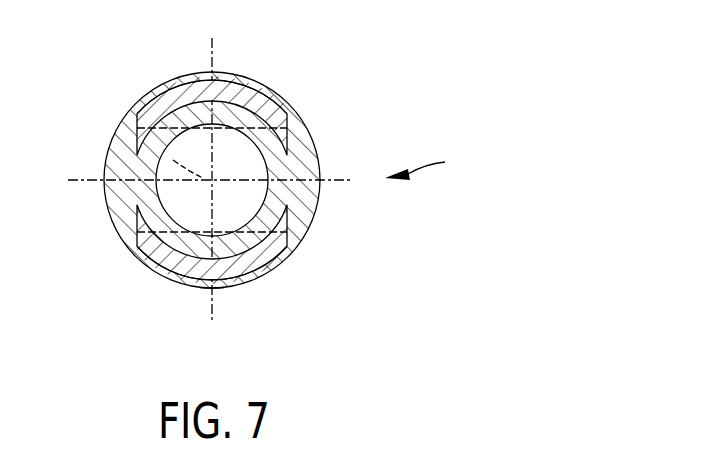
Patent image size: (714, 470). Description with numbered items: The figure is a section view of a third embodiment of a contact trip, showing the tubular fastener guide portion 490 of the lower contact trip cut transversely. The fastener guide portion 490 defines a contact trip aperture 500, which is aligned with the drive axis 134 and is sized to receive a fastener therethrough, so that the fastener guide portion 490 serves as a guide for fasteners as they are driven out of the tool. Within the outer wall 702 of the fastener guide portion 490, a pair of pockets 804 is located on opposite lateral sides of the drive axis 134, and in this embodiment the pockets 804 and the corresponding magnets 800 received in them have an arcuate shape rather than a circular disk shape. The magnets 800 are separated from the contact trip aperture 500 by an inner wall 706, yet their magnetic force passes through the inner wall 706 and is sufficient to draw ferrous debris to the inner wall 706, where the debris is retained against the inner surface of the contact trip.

The outer wall 702 is at (130, 250).
The magnets 800 is at (262, 82).
The pockets 804 is at (173, 82).
The drive axis 134 is at (126, 116).
The contact trip aperture 500 is at (230, 167).
The inner wall 706 is at (230, 280).
The fastener guide portion 490 is at (430, 165).